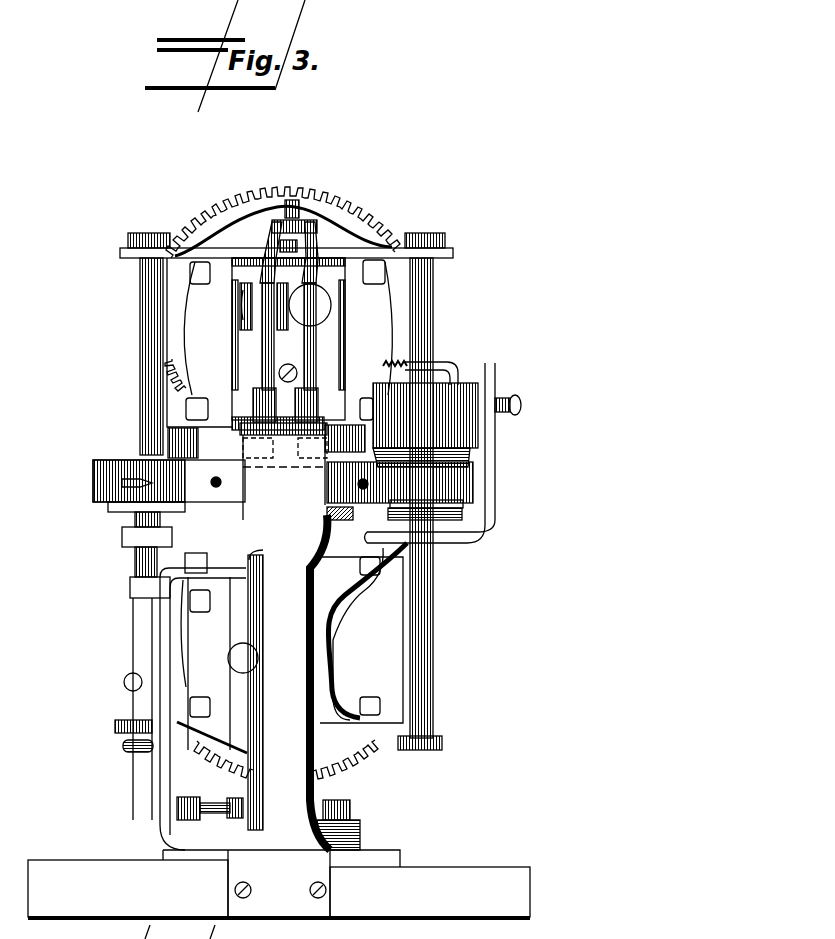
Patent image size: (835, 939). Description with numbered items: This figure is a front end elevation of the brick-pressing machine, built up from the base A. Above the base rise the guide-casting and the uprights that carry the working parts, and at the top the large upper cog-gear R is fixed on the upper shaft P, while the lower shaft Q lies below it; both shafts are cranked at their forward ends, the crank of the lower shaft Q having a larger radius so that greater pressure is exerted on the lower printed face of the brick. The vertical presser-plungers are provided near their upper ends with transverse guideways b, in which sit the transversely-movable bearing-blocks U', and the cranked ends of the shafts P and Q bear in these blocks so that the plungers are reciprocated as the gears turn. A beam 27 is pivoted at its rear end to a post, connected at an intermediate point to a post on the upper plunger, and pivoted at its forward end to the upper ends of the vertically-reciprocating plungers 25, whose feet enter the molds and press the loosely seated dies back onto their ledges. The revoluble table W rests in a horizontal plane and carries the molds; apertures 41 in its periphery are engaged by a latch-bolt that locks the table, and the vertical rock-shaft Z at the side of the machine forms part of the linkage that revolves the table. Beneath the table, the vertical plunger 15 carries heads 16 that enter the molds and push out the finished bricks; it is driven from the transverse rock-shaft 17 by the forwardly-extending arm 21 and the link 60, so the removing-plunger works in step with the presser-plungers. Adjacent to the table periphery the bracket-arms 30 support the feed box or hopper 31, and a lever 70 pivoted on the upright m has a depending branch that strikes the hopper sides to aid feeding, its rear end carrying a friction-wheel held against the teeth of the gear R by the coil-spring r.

The cog-gear R is at (283, 205).
The beam 27 is at (298, 222).
The bearing-blocks U' is at (253, 527).
The upright m is at (433, 284).
The shaft P is at (322, 311).
The vertically-reciprocating plungers 25 is at (268, 328).
The transverse guideways b is at (260, 320).
The coil-spring r is at (383, 363).
The lever 70 is at (455, 363).
The feed box or hopper 31 is at (425, 425).
The bracket-arms 30 is at (490, 452).
The revoluble table W is at (95, 483).
The apertures 41 is at (210, 481).
The vertical rock-shaft Z is at (178, 517).
The heads 16 is at (125, 538).
The vertical plunger 15 is at (143, 569).
The shaft Q is at (247, 657).
The link 60 is at (170, 755).
The arm 21 is at (175, 820).
The transverse rock-shaft 17 is at (335, 812).
The base A is at (279, 894).